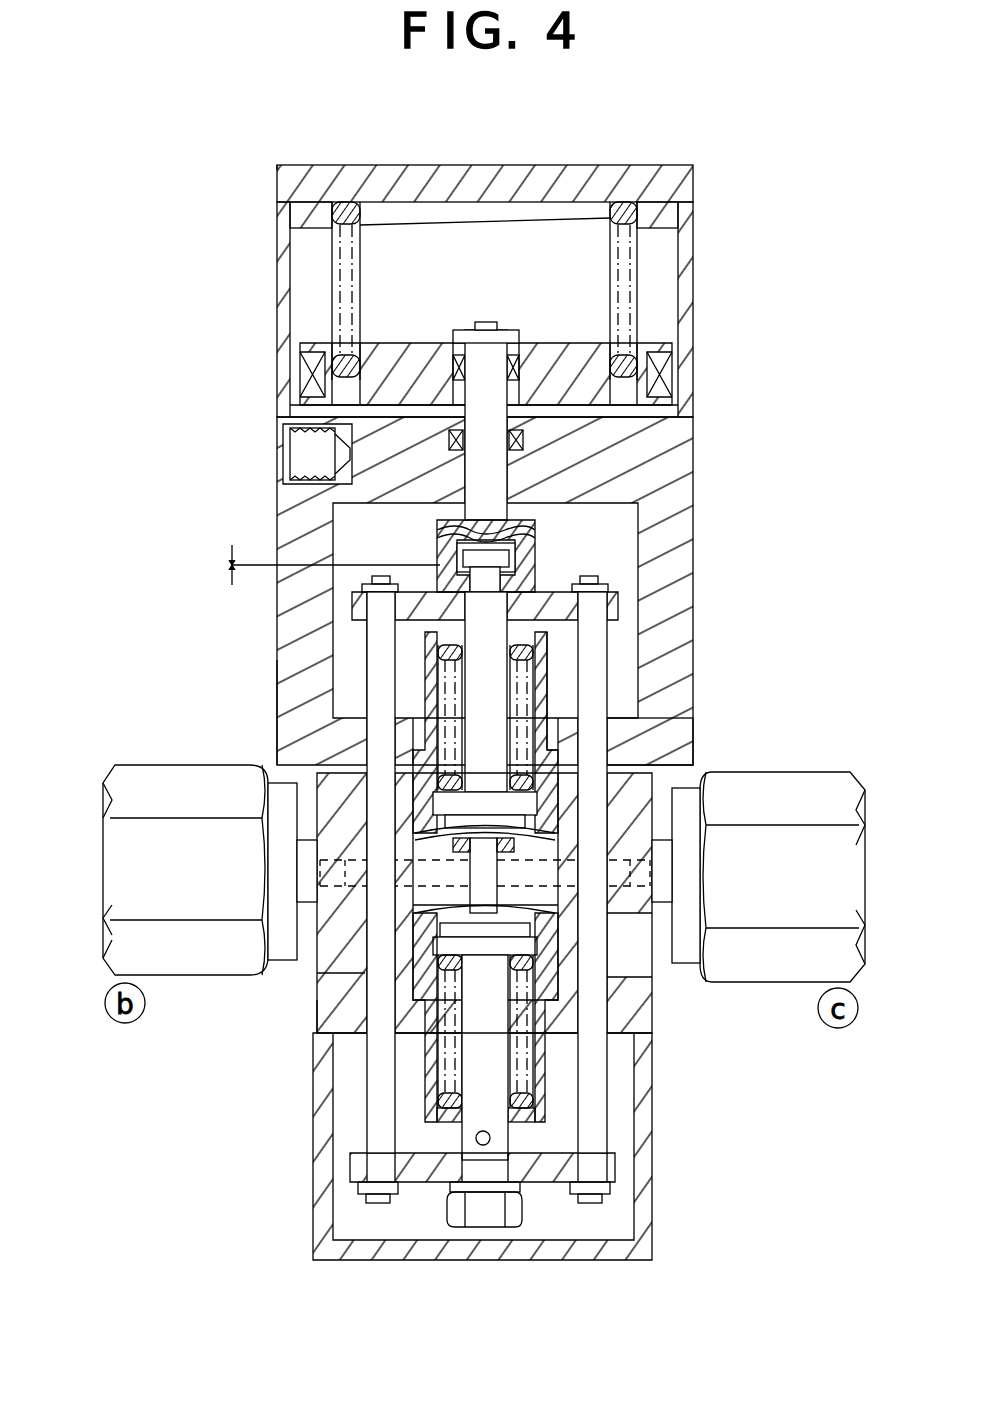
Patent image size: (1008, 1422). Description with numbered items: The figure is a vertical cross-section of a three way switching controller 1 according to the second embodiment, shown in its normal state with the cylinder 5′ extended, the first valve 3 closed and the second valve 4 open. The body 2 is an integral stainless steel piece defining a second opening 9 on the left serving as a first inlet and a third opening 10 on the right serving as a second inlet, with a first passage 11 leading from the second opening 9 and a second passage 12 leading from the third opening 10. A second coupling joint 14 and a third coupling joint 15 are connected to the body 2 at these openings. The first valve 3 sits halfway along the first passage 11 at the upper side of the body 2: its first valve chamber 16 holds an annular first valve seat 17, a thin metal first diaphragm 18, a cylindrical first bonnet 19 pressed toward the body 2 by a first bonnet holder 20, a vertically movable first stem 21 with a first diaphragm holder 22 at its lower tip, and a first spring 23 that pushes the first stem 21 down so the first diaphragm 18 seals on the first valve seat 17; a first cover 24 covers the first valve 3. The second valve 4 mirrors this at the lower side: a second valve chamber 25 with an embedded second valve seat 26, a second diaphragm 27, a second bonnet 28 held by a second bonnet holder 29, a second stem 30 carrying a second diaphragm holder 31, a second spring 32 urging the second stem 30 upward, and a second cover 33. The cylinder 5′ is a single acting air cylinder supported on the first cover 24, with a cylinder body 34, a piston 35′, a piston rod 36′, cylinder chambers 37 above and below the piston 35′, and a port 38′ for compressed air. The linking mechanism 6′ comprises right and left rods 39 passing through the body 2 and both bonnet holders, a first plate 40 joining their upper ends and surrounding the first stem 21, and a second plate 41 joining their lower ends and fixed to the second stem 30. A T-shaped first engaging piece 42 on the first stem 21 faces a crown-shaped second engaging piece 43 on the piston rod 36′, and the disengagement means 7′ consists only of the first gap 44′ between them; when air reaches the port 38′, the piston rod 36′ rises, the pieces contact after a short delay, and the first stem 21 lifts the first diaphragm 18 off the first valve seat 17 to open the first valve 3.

The three way switching controller 1 is at (228, 135).
The body 2 is at (310, 980).
The first valve 3 is at (548, 682).
The second valve 4 is at (426, 1062).
The cylinder 5′ is at (632, 167).
The linking mechanism 6′ is at (278, 704).
The disengagement means 7′ is at (540, 526).
The second opening 9 is at (300, 882).
The third opening 10 is at (655, 885).
The first passage 11 is at (330, 862).
The second passage 12 is at (672, 852).
The second coupling joint 14 is at (120, 946).
The third coupling joint 15 is at (850, 950).
The first valve chamber 16 is at (556, 830).
The first valve seat 17 is at (395, 863).
The first diaphragm 18 is at (440, 848).
The first bonnet 19 is at (450, 647).
The first bonnet holder 20 is at (660, 750).
The first stem 21 is at (487, 673).
The first diaphragm holder 22 is at (560, 762).
The first spring 23 is at (374, 684).
The first cover 24 is at (302, 512).
The second valve chamber 25 is at (560, 905).
The second valve seat 26 is at (445, 895).
The second diaphragm 27 is at (530, 920).
The second bonnet 28 is at (547, 1055).
The second bonnet holder 29 is at (330, 1030).
The second stem 30 is at (478, 1092).
The second diaphragm holder 31 is at (486, 940).
The second spring 32 is at (545, 1108).
The second cover 33 is at (600, 1252).
The cylinder body 34 is at (683, 317).
The piston 35′ is at (396, 385).
The piston rod 36′ is at (490, 466).
The cylinder chambers 37 is at (580, 250).
The port 38′ is at (283, 450).
The rods 39 is at (382, 634).
The first plate 40 is at (610, 606).
The second plate 41 is at (432, 1172).
The first engaging piece 42 is at (500, 566).
The second engaging piece 43 is at (440, 570).
The first gap 44′ is at (228, 565).